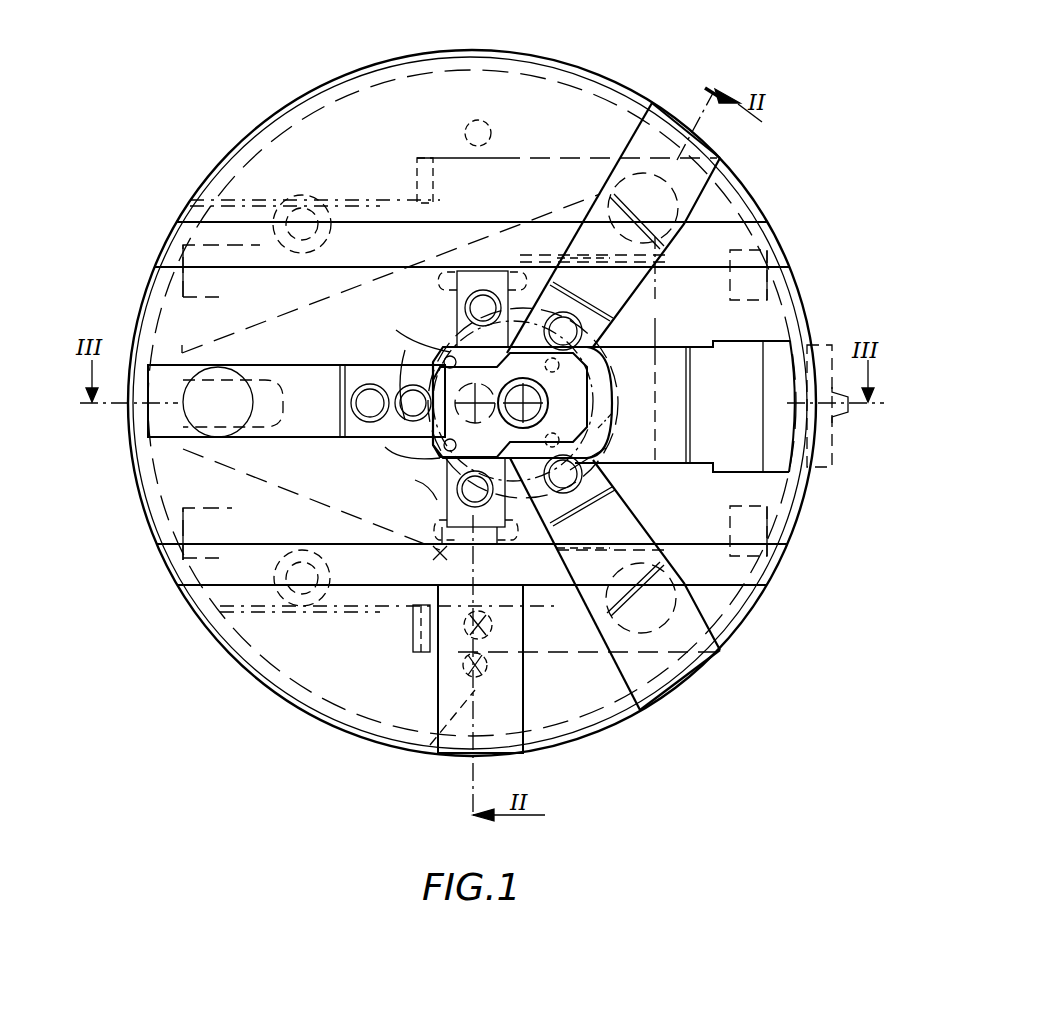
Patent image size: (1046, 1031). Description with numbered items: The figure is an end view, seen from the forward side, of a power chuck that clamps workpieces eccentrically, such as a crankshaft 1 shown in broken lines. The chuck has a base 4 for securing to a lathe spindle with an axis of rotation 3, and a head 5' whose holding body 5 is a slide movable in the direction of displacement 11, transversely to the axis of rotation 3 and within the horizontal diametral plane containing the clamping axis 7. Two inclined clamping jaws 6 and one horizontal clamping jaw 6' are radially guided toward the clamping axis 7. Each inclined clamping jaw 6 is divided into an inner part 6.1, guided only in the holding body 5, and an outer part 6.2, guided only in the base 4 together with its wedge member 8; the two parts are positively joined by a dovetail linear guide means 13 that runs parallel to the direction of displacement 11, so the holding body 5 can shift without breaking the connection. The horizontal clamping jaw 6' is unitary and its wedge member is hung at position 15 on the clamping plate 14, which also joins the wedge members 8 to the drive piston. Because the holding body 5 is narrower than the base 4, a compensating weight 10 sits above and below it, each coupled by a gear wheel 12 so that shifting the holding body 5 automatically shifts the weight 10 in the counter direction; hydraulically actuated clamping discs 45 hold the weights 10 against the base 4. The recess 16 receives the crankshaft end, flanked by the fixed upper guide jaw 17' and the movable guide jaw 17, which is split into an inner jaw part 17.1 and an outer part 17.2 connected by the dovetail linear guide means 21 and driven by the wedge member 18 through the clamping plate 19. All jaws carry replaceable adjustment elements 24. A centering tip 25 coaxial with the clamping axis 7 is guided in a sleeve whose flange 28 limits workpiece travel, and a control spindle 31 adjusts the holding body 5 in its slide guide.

The crankshaft 1 is at (613, 414).
The axis of rotation 3 is at (483, 420).
The base 4 is at (752, 200).
The holding body 5 is at (479, 377).
The head 5' is at (391, 273).
The inclined clamping jaw 6 is at (613, 406).
The horizontal clamping jaw 6' is at (296, 424).
The inner part 6.1 is at (640, 302).
The outer part 6.2 is at (640, 128).
The clamping axis 7 is at (523, 413).
The wedge member 8 is at (624, 180).
The compensating weight 10 is at (362, 112).
The direction of displacement 11 is at (283, 335).
The gear wheel 12 is at (308, 195).
The linear guide means 13 is at (582, 258).
The clamping plate 14 is at (260, 325).
The position 15 is at (212, 372).
The recess 16 is at (425, 340).
The guide jaw 17 is at (440, 558).
The upper guide jaw 17' is at (469, 311).
The inner jaw part 17.1 is at (440, 554).
The outer part 17.2 is at (524, 712).
The wedge member 18 is at (440, 648).
The clamping plate 19 is at (398, 350).
The linear guide means 21 is at (200, 548).
The adjustment element 24 is at (497, 278).
The centering tip 25 is at (603, 396).
The flange 28 is at (585, 386).
The control spindle 31 is at (840, 426).
The clamping disc 45 is at (485, 133).